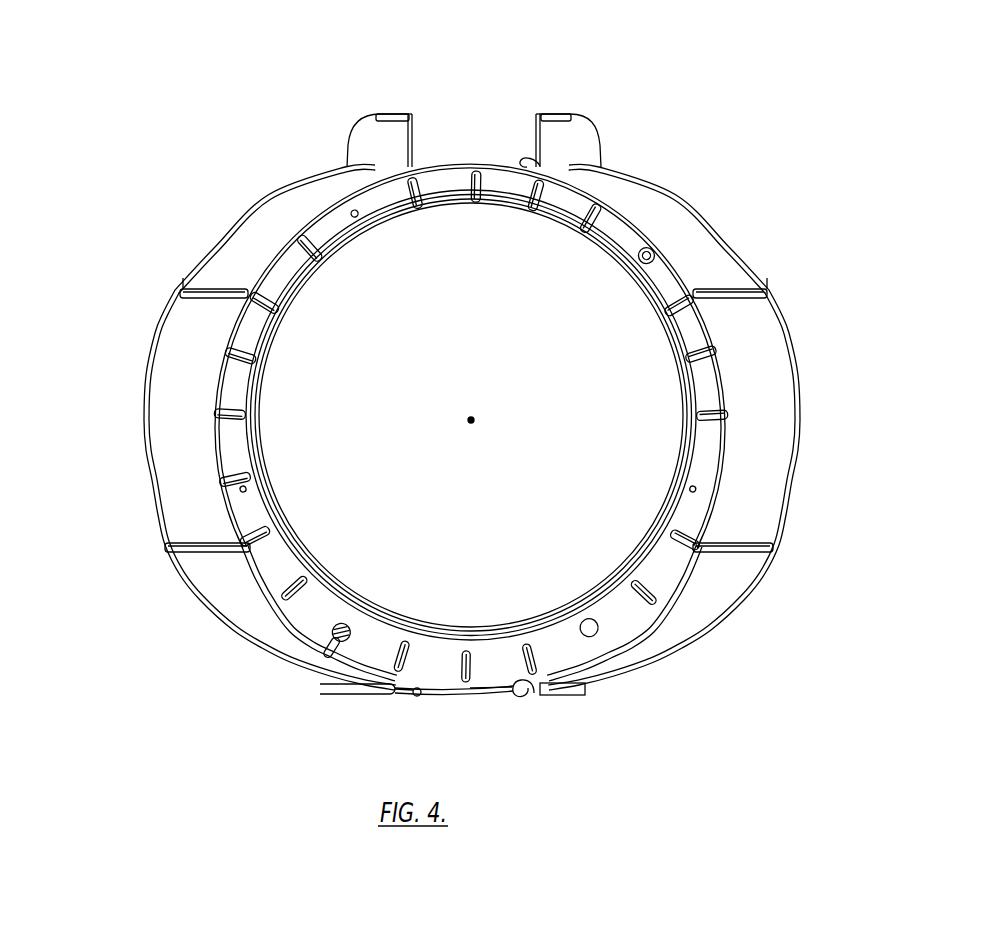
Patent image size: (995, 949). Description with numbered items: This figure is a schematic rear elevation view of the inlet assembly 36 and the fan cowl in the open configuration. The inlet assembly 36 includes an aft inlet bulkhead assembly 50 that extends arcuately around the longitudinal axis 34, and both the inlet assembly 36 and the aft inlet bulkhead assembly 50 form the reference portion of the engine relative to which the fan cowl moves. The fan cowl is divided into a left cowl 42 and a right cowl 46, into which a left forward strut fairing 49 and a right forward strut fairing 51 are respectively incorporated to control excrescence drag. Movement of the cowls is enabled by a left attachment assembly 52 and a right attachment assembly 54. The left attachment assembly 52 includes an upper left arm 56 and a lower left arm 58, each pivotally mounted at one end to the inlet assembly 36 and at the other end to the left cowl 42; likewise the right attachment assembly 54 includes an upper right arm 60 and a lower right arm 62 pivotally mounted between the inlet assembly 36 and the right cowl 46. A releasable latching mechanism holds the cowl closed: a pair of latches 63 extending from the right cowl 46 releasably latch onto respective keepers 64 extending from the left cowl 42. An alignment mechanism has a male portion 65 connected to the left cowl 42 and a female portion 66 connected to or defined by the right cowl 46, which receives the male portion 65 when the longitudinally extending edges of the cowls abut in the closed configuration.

The longitudinal axis 34 is at (472, 419).
The inlet assembly 36 is at (453, 699).
The left fan cowl 42 is at (286, 196).
The right fan cowl 46 is at (705, 203).
The left forward strut fairing 49 is at (351, 152).
The aft inlet bulkhead assembly 50 is at (494, 693).
The right forward strut fairing 51 is at (600, 136).
The left attachment assembly 52 is at (171, 466).
The right attachment assembly 54 is at (754, 500).
The upper left arm 56 is at (221, 290).
The lower left arm 58 is at (210, 550).
The upper right arm 60 is at (762, 295).
The lower right arm 62 is at (750, 545).
The latch 63 is at (523, 158).
The keeper 64 is at (416, 166).
The male portion 65 is at (413, 112).
The female portion 66 is at (545, 115).